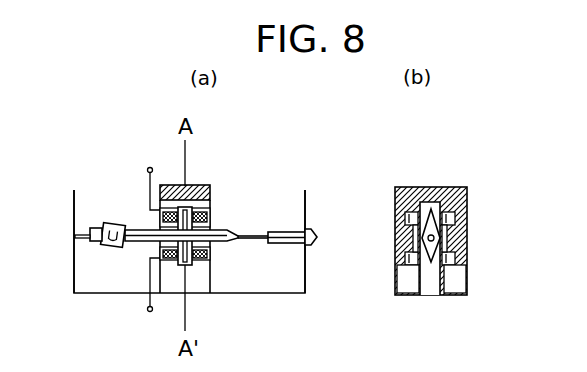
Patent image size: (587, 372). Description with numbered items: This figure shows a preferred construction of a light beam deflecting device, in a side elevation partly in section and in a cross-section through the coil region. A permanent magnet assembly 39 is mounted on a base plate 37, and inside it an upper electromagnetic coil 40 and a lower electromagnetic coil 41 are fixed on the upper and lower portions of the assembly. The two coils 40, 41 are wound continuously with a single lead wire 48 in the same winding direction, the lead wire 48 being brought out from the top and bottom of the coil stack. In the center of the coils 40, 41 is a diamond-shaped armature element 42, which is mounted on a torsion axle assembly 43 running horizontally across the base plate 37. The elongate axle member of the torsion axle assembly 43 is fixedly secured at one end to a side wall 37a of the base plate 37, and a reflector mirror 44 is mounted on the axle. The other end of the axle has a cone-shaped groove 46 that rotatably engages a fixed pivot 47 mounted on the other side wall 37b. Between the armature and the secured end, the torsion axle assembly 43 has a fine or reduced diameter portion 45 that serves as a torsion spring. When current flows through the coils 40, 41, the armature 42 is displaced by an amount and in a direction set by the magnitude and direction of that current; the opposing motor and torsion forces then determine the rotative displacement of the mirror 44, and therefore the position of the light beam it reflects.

The base plate 37 is at (258, 295).
The side wall 37a is at (307, 219).
The other side wall 37b is at (74, 192).
The permanent magnet assembly 39 is at (196, 186).
The electromagnetic coil 40 is at (212, 216).
The electromagnetic coil 41 is at (210, 253).
The diamond-shaped armature element 42 is at (189, 265).
The torsion axle assembly 43 is at (418, 238).
The reflector mirror 44 is at (114, 223).
The fine or reduced diameter portion 45 is at (250, 239).
The cone-shaped groove 46 is at (100, 243).
The fixed pivot 47 is at (76, 244).
The lead wire 48 is at (147, 168).